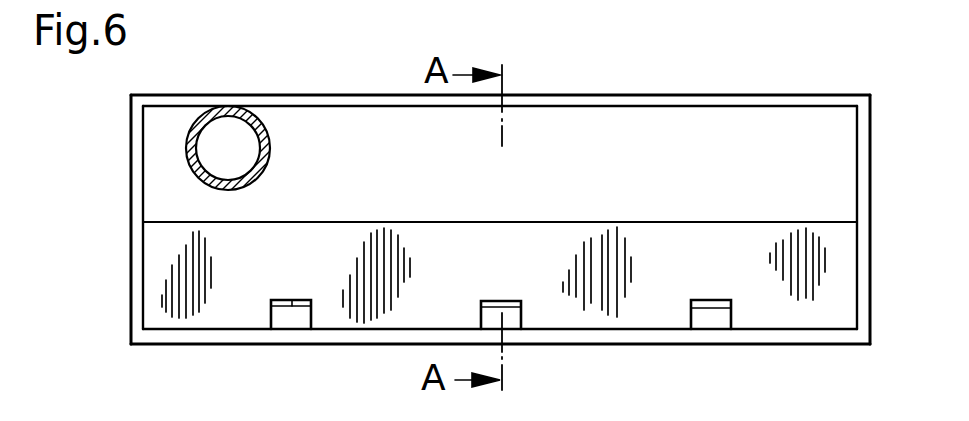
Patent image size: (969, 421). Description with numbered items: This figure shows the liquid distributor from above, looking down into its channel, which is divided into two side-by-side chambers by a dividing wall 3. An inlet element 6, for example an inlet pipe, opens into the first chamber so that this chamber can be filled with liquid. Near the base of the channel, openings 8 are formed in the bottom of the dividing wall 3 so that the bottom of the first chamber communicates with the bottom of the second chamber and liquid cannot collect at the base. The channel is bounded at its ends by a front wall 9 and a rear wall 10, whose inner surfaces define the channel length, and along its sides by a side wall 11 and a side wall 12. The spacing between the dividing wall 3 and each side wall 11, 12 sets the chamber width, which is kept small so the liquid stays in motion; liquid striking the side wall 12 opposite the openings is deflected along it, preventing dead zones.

The dividing wall 3 is at (683, 222).
The inlet element 6 is at (200, 108).
The openings 8 is at (731, 301).
The front wall 9 is at (131, 261).
The rear wall 10 is at (872, 228).
The side wall 11 is at (297, 346).
The side wall 12 is at (290, 95).